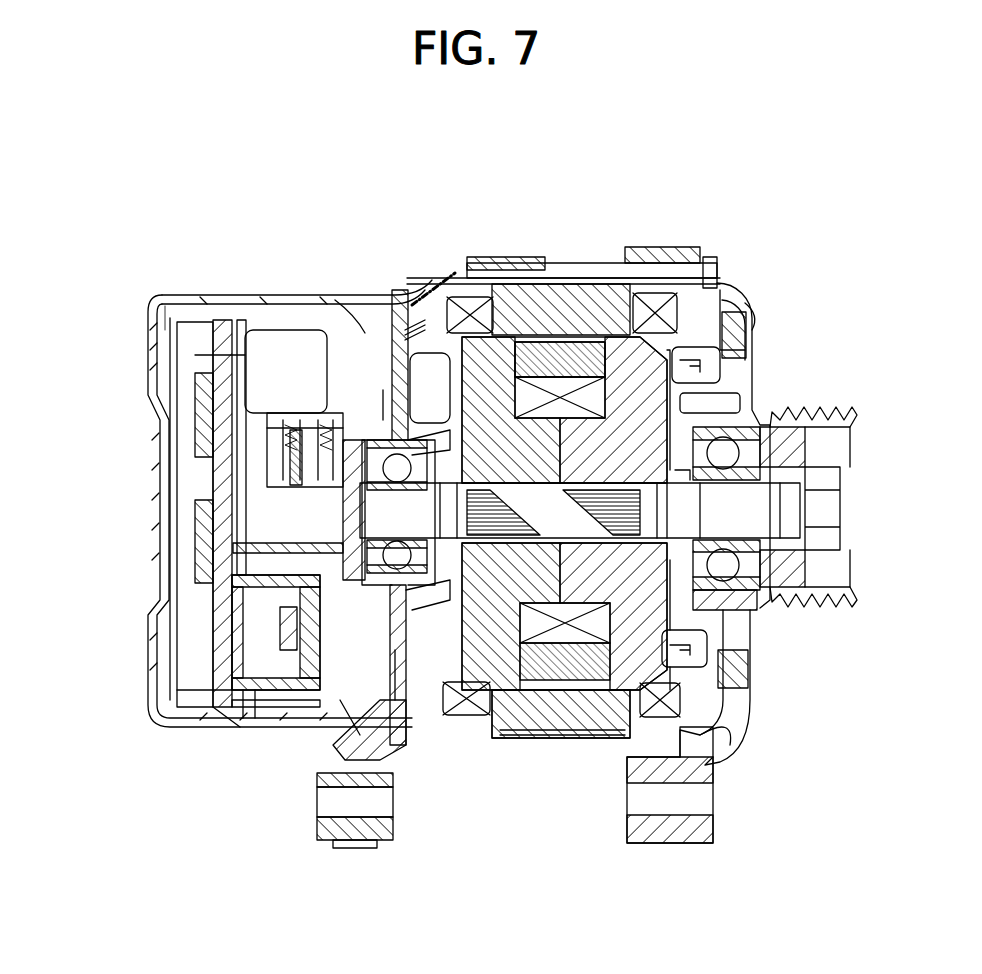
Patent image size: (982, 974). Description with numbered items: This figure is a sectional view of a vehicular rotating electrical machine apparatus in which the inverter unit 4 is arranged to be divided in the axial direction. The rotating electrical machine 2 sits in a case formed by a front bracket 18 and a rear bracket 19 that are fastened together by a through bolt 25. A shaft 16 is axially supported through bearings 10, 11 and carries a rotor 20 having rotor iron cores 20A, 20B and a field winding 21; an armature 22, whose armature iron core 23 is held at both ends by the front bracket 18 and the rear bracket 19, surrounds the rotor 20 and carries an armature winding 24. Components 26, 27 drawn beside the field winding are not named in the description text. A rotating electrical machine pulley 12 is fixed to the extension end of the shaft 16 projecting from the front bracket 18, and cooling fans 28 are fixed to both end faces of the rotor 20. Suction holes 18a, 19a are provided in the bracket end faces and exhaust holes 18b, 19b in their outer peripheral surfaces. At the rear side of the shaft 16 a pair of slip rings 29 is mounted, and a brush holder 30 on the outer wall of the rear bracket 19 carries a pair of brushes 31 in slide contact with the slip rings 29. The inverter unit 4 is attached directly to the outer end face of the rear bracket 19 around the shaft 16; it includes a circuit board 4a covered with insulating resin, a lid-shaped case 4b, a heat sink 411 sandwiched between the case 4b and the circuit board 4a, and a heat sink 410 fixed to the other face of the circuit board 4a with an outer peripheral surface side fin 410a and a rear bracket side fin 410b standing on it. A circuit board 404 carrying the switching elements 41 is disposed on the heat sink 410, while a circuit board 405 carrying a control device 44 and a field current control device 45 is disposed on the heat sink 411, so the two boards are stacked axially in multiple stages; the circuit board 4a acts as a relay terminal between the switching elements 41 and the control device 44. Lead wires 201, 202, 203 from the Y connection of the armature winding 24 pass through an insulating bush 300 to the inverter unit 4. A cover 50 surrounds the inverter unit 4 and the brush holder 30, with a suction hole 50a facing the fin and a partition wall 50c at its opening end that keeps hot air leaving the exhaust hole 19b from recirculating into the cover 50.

The rotating electrical machine 2 is at (518, 280).
The inverter unit 4 is at (190, 322).
The circuit board 4a is at (230, 705).
The case 4b is at (177, 690).
The bearing 10 is at (768, 403).
The bearing 11 is at (397, 540).
The rotating electrical machine pulley 12 is at (842, 612).
The shaft 16 is at (770, 506).
The front bracket 18 is at (730, 282).
The suction hole 18a is at (738, 372).
The exhaust hole 18b is at (752, 305).
The rear bracket 19 is at (430, 290).
The suction hole 19a is at (365, 335).
The exhaust hole 19b is at (395, 770).
The rotor 20 is at (664, 665).
The rotor iron core 20A is at (640, 660).
The rotor iron core 20B is at (500, 660).
The field winding 21 is at (540, 740).
The armature 22 is at (560, 738).
The armature iron core 23 is at (565, 378).
The armature winding 24 is at (470, 297).
The through bolt 25 is at (716, 260).
The coil bobbin 26 is at (590, 355).
The insulator 27 is at (560, 359).
The cooling fan 28 is at (422, 355).
The slip ring 29 is at (315, 533).
The brush holder 30 is at (267, 462).
The brush 31 is at (330, 487).
The switching element 41 is at (275, 612).
The control device 44 is at (240, 538).
The field current control device 45 is at (195, 392).
The cover 50 is at (148, 318).
The suction hole 50a is at (250, 295).
The partition wall 50c is at (440, 300).
The lead wire 201 is at (410, 325).
The lead wire 202 is at (415, 330).
The lead wire 203 is at (415, 335).
The insulating bush 300 is at (383, 392).
The circuit board 404 is at (243, 720).
The circuit board 405 is at (290, 632).
The heat sink 410 is at (220, 720).
The outer peripheral surface side fin 410a is at (255, 722).
The rear bracket side fin 410b is at (350, 735).
The heat sink 411 is at (195, 355).